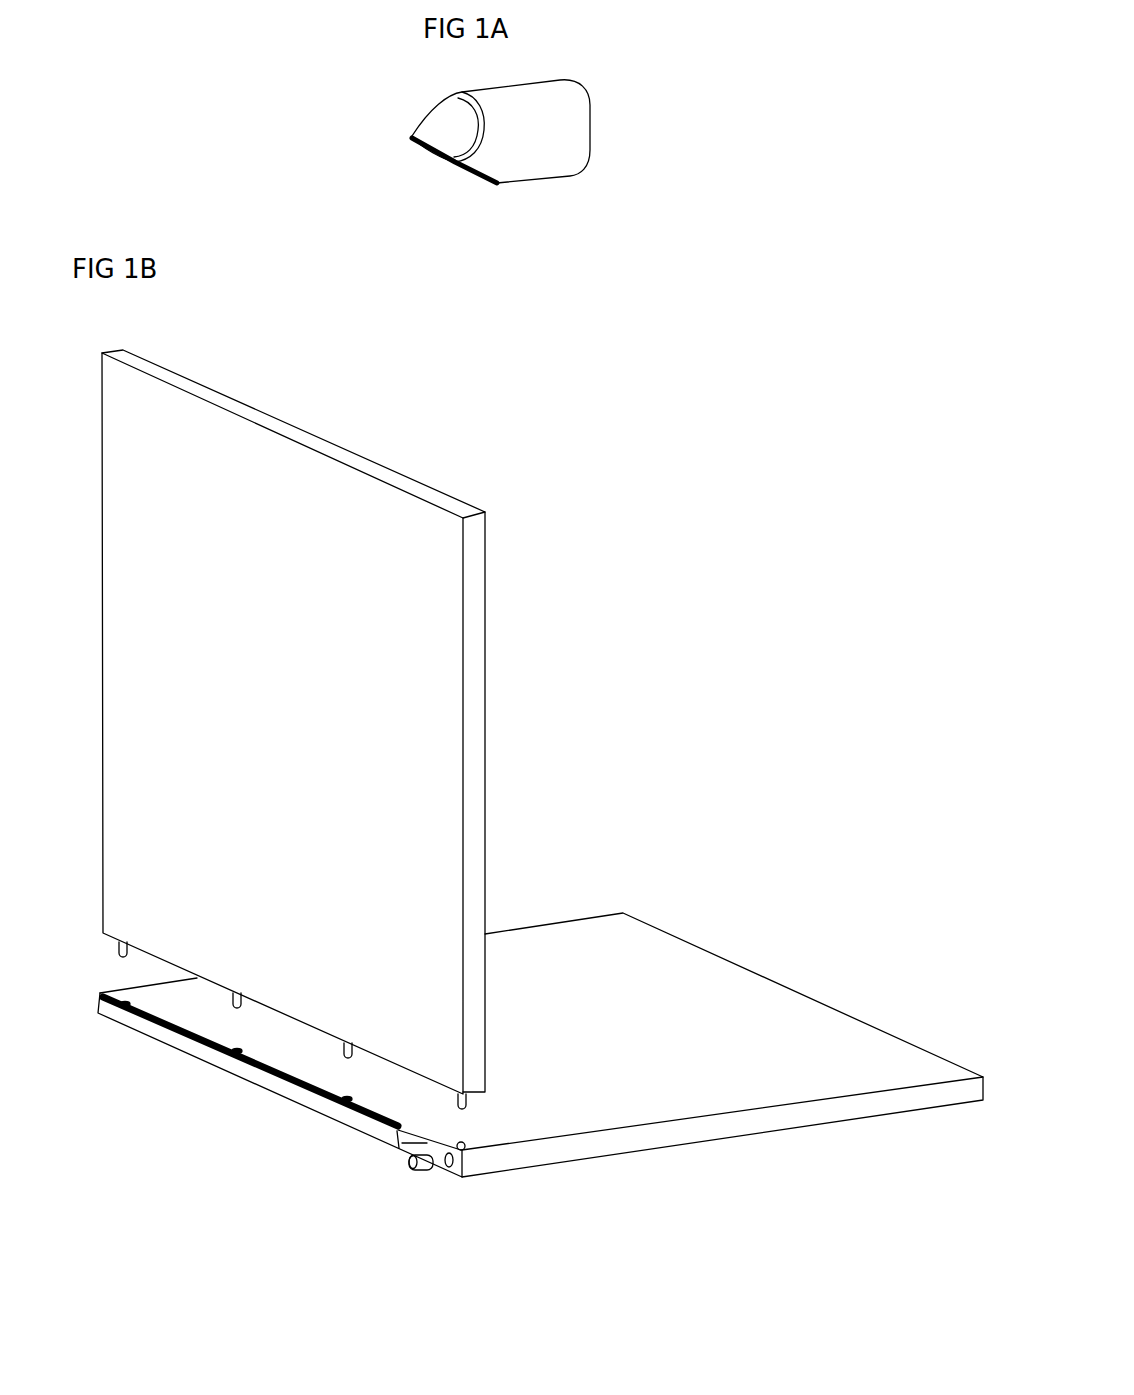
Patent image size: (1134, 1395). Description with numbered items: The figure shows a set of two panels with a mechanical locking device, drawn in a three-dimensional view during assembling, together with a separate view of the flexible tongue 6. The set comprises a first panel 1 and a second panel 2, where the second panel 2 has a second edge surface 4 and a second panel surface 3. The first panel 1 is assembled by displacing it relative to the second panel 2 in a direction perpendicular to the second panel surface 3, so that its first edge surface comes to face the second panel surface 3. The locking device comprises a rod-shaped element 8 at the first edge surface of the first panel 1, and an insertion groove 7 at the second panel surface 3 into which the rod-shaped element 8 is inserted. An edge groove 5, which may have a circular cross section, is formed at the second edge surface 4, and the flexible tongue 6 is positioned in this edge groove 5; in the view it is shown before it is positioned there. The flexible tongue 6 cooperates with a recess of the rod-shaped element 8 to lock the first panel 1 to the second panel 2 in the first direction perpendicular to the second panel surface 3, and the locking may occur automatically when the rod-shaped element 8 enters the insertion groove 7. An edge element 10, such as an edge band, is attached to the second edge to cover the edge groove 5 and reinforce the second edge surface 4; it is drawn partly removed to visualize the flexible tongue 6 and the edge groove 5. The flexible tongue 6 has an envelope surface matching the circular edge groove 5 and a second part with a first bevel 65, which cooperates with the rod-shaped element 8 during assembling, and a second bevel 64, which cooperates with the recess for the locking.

In FIG. 1B, the first panel 1 is at (331, 729).
In FIG. 1B, the second panel 2 is at (524, 1086).
In FIG. 1B, the second panel surface 3 is at (807, 1042).
In FIG. 1B, the second edge surface 4 is at (398, 1148).
In FIG. 1B, the edge groove 5 is at (447, 1167).
In FIG. 1A, the flexible tongue 6 is at (492, 152).
In FIG. 1B, the flexible tongue 6 is at (418, 1170).
In FIG. 1B, the insertion groove 7 is at (466, 1146).
In FIG. 1B, the rod-shaped element 8 is at (468, 1101).
In FIG. 1B, the edge element 10 is at (173, 1038).
In FIG. 1A, the second bevel 64 is at (450, 167).
In FIG. 1A, the first bevel 65 is at (437, 128).